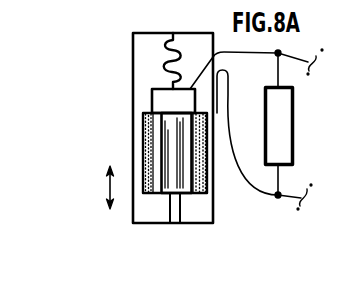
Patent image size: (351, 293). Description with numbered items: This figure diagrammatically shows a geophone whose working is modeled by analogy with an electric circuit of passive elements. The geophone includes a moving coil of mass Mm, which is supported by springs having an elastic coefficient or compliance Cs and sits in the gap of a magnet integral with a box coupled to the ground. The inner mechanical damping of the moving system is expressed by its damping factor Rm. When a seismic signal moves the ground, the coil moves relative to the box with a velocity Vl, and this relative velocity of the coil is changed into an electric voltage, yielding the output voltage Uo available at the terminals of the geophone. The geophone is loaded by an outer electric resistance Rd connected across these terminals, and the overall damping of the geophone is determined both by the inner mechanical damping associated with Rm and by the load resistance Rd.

The compliance Cs is at (157, 50).
The mass of the moving coil Mm is at (150, 90).
The damping factor Rm is at (143, 141).
The velocity Vl is at (93, 187).
The outer electric resistance Rd is at (264, 124).
The output voltage Uo is at (305, 129).